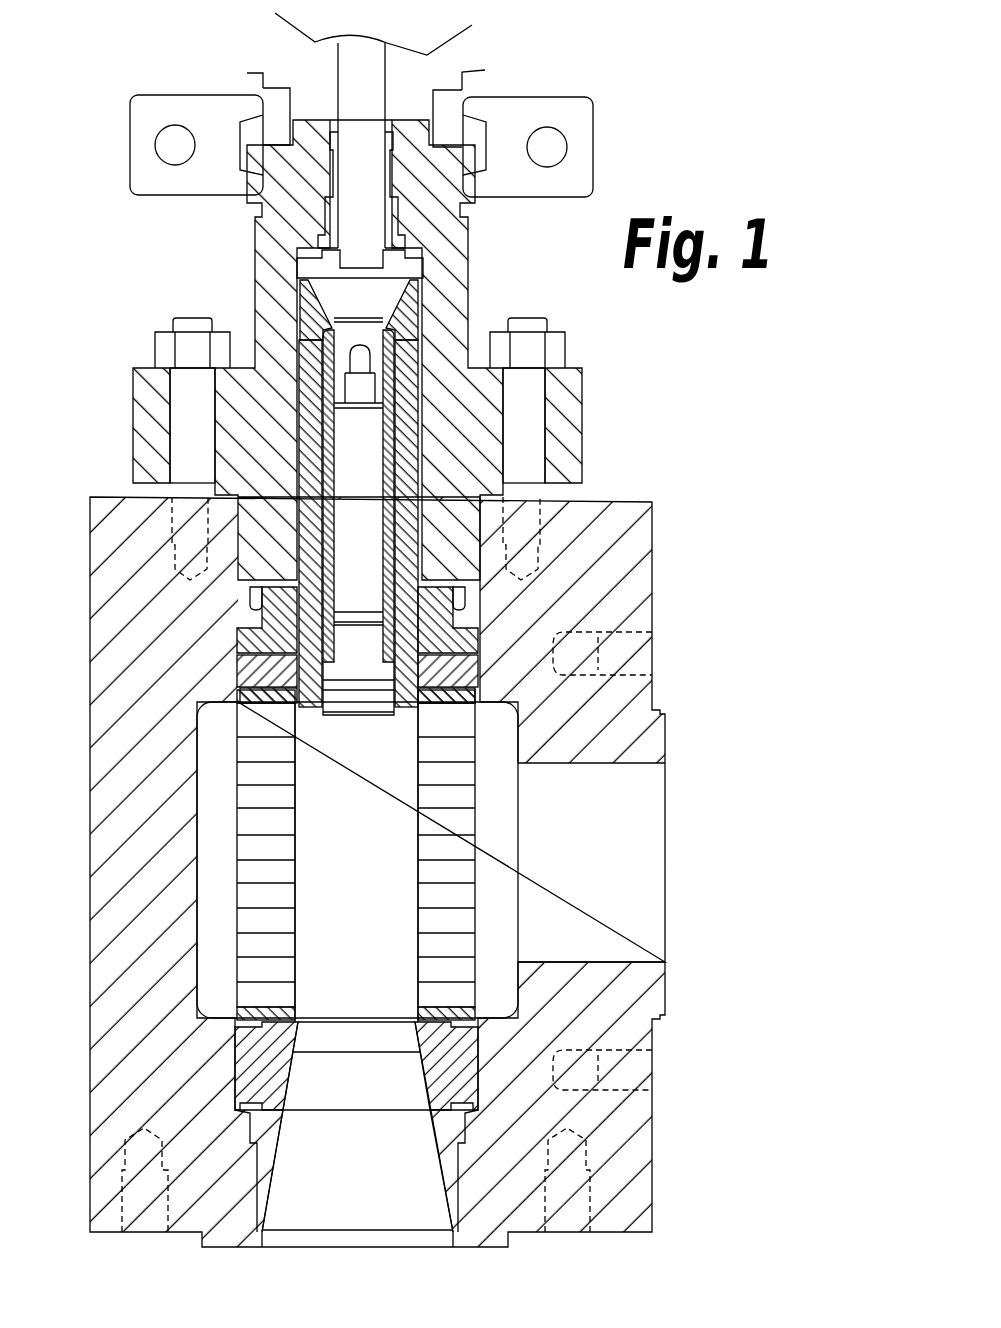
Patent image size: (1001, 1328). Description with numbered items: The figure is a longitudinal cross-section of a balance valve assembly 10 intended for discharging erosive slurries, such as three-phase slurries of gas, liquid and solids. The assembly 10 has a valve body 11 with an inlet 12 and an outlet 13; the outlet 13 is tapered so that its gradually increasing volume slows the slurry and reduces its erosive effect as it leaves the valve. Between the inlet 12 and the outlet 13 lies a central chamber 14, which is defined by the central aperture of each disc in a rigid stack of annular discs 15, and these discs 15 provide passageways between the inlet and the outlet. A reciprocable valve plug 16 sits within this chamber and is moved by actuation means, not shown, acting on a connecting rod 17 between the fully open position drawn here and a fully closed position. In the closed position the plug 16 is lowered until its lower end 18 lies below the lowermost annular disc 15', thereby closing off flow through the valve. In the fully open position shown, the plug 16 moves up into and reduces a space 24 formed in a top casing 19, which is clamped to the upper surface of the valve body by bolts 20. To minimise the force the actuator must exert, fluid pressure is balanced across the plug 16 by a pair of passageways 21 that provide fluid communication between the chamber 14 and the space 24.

The balance valve assembly 10 is at (692, 519).
The valve body 11 is at (643, 580).
The inlet 12 is at (627, 817).
The outlet 13 is at (392, 1213).
The central chamber 14 is at (380, 900).
The annular discs 15 is at (376, 848).
The lowermost annular disc 15' is at (474, 972).
The valve plug 16 is at (405, 360).
The connecting rod 17 is at (382, 77).
The lower end 18 is at (303, 703).
The top casing 19 is at (252, 250).
The bolts 20 is at (183, 390).
The passageways 21 is at (320, 302).
The space 24 is at (410, 270).